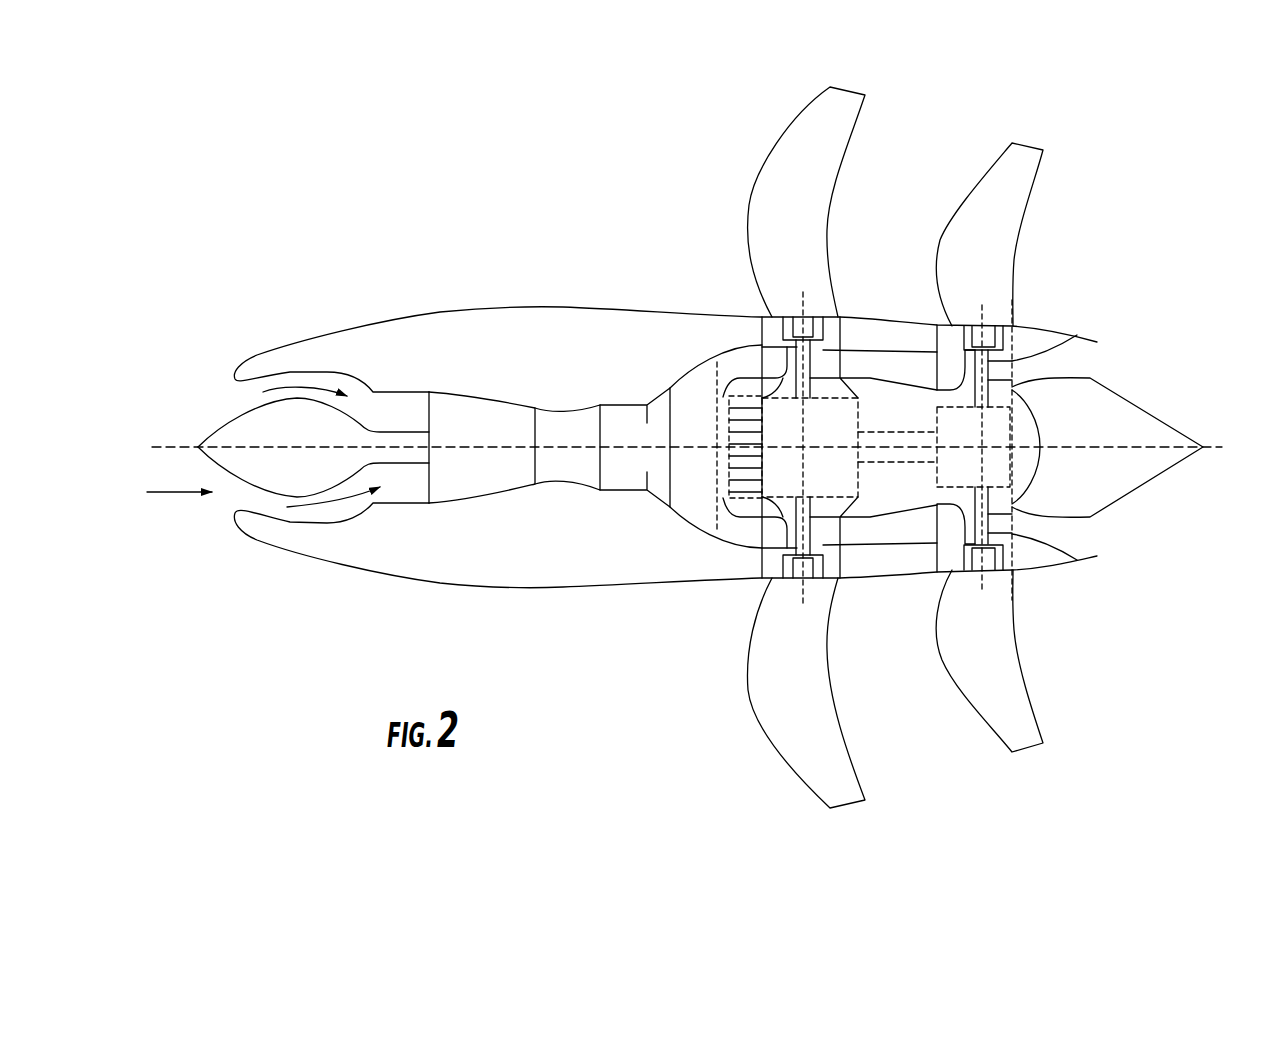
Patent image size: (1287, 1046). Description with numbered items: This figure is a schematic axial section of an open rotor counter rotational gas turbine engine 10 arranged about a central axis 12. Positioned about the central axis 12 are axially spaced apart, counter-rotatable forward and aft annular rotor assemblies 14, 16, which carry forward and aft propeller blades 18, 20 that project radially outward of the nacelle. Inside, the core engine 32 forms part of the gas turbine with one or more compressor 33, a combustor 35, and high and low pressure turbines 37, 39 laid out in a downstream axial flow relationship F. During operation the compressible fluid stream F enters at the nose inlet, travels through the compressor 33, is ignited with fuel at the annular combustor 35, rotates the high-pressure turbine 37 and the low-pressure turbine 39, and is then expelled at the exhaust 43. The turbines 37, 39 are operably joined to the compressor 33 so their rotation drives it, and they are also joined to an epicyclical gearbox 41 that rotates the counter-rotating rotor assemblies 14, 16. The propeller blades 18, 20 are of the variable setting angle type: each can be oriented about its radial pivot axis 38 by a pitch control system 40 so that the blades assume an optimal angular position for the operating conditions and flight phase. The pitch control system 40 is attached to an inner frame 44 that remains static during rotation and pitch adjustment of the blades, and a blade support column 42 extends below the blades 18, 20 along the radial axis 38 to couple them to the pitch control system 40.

The open rotor gas turbine engine 10 is at (305, 268).
The central axis 12 is at (1135, 402).
The forward annular rotor assembly 14 is at (767, 732).
The aft annular rotor assembly 16 is at (1030, 712).
The forward propeller blades 18 is at (767, 190).
The aft propeller blades 20 is at (1003, 193).
The core engine 32 is at (470, 310).
The compressor 33 is at (497, 459).
The combustor 35 is at (577, 459).
The high pressure turbine 37 is at (655, 459).
The radial pivot axis 38 is at (1000, 292).
The low pressure turbine 39 is at (708, 459).
The pitch control system 40 is at (973, 447).
The epicyclical gearbox 41 is at (723, 400).
The blade support column 42 is at (1097, 343).
The exhaust 43 is at (1150, 392).
The inner frame 44 is at (947, 400).
The flow of compressible fluid stream F is at (165, 494).